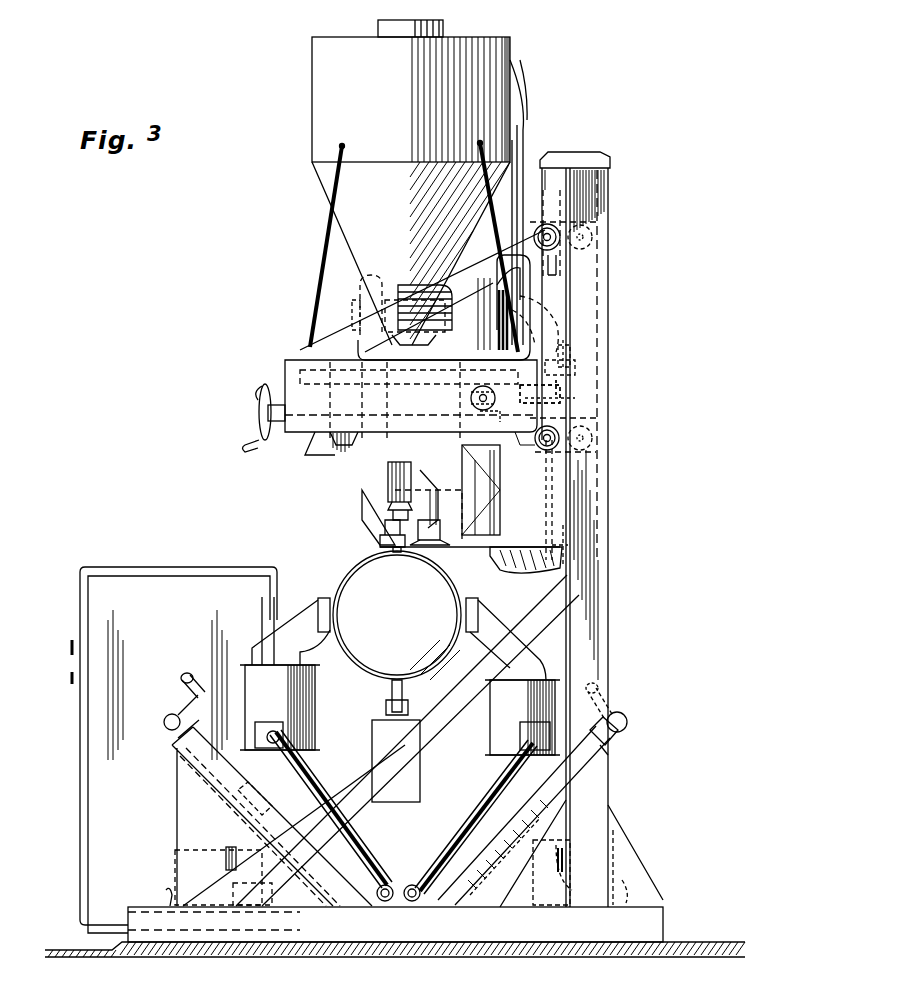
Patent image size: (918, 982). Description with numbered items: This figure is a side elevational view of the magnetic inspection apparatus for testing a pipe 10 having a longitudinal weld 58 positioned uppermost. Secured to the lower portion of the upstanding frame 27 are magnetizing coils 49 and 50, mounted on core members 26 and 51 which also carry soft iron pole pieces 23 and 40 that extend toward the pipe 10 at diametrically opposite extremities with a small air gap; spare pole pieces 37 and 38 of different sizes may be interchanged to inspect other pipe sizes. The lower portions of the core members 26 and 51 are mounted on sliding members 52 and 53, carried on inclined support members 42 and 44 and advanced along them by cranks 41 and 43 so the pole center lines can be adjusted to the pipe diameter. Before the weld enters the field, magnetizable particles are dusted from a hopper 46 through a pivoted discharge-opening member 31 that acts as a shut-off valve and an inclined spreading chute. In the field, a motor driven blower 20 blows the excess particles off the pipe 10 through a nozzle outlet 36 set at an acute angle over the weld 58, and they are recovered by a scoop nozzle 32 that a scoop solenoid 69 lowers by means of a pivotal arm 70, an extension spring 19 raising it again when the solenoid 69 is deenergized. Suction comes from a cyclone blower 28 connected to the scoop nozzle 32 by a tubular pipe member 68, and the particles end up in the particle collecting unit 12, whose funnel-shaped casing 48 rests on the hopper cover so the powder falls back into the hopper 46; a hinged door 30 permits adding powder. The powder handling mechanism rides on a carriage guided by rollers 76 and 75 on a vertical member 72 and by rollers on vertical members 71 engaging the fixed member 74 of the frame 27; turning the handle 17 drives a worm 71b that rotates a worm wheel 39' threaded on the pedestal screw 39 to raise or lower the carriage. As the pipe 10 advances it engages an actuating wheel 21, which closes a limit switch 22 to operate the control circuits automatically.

The pipe 10 is at (344, 585).
The particle collecting unit 12 is at (312, 163).
The handle 17 is at (264, 395).
The extension spring 19 is at (435, 492).
The blower 20 is at (378, 278).
The actuating wheel 21 is at (400, 703).
The limit switch 22 is at (422, 772).
The pole piece 23 is at (310, 605).
The core member 26 is at (305, 818).
The frame 27 is at (604, 500).
The cyclone blower 28 is at (513, 291).
The door 30 is at (553, 198).
The discharge-opening member 31 is at (383, 532).
The scoop nozzle 32 is at (440, 548).
The nozzle outlet 36 is at (368, 512).
The spare pole piece 37 is at (168, 890).
The spare pole piece 38 is at (595, 870).
The pedestal screw 39 is at (598, 353).
The worm wheel 39' is at (612, 382).
The pole piece 40 is at (492, 618).
The crank 41 is at (180, 700).
The inclined support member 42 is at (182, 770).
The crank 43 is at (608, 692).
The inclined support member 44 is at (608, 772).
The hopper 46 is at (356, 458).
The funnel-shaped casing 48 is at (328, 182).
The magnetizing coil 49 is at (308, 697).
The magnetizing coil 50 is at (505, 712).
The core member 51 is at (522, 800).
The sliding member 52 is at (232, 742).
The sliding member 53 is at (480, 838).
The longitudinal weld 58 is at (395, 553).
The tubular pipe member 68 is at (572, 365).
The scoop solenoid 69 is at (478, 478).
The pivotal arm 70 is at (432, 524).
The vertical member 71 is at (310, 428).
The worm 71b is at (578, 402).
The vertical member 72 is at (305, 348).
The fixed member 74 is at (568, 556).
The rollers 75 is at (585, 421).
The rollers 76 is at (592, 232).